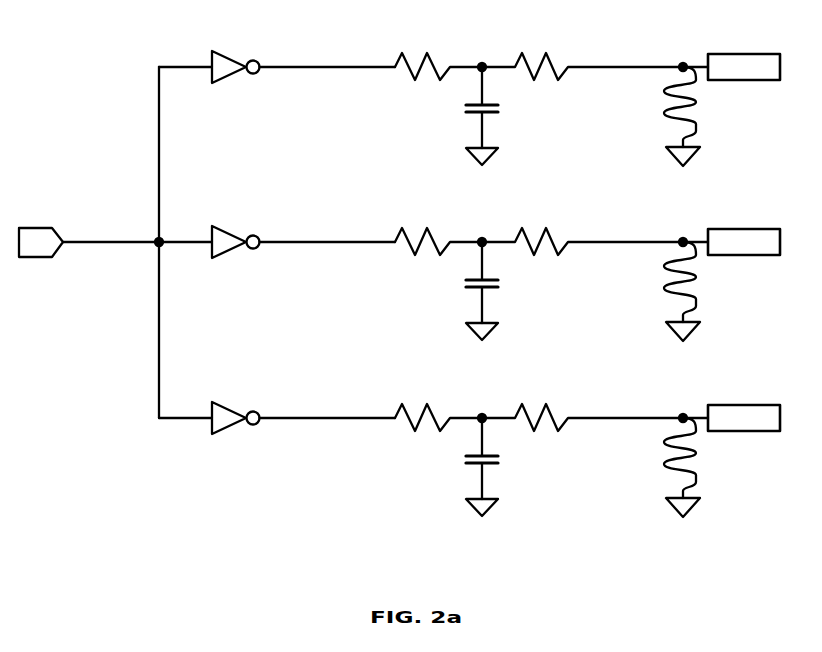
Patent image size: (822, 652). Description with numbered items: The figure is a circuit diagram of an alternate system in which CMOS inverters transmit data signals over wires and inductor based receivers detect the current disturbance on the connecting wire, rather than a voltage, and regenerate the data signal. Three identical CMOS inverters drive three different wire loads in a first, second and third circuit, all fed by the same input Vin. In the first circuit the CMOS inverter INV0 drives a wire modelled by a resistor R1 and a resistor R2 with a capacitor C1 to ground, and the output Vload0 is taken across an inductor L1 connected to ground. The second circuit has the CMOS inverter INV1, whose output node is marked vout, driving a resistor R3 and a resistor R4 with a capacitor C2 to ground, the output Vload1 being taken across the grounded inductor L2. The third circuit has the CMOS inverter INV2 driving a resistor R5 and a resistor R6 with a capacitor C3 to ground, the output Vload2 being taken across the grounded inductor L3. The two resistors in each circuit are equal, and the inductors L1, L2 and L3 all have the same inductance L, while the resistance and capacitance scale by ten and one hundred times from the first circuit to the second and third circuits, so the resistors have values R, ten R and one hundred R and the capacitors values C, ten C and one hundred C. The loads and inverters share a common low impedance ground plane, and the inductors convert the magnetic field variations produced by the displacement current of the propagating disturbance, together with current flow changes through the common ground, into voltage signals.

The input Vin is at (89, 242).
The inverter output node vout is at (305, 231).
The CMOS inverter INV0 is at (277, 57).
The CMOS inverter INV1 is at (277, 232).
The CMOS inverter INV2 is at (277, 408).
The resistor R1 is at (438, 67).
The resistor R2 is at (582, 67).
The resistor R3 is at (438, 242).
The resistor R4 is at (582, 242).
The resistor R5 is at (438, 418).
The resistor R6 is at (582, 418).
The capacitor C1 is at (488, 114).
The capacitor C2 is at (493, 289).
The capacitor C3 is at (498, 465).
The inductor L1 is at (691, 114).
The inductor L2 is at (691, 289).
The inductor L3 is at (691, 465).
The output Vload0 is at (731, 67).
The output Vload1 is at (731, 242).
The output Vload2 is at (731, 418).